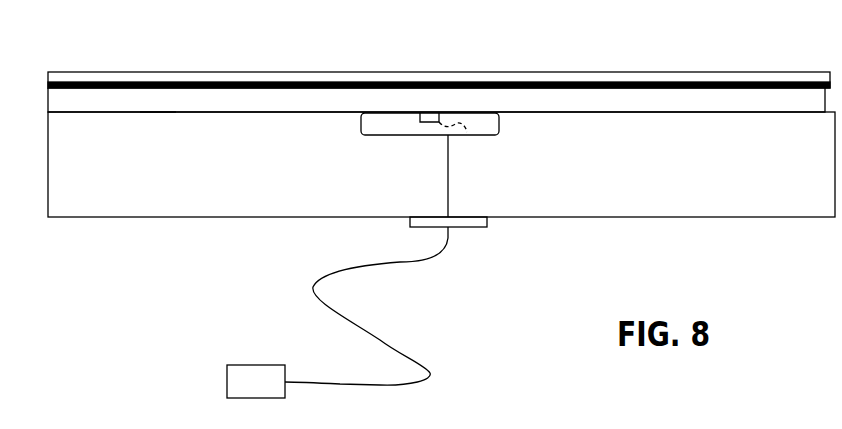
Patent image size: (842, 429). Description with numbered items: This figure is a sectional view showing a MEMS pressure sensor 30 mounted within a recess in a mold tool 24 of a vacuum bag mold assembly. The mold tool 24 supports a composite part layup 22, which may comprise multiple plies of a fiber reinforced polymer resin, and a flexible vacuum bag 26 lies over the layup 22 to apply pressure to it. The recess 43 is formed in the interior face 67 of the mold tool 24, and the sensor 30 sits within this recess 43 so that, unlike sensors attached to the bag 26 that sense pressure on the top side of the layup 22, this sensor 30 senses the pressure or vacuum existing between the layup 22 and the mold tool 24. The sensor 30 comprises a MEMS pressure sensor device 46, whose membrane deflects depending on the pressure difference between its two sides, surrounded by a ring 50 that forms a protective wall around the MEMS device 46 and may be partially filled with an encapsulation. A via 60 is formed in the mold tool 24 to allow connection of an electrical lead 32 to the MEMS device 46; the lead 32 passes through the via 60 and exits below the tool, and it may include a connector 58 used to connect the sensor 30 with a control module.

The composite part layup 22 is at (679, 105).
The mold tool 24 is at (98, 200).
The vacuum bag 26 is at (253, 80).
The pressure sensor 30 is at (354, 135).
The electrical lead 32 is at (413, 355).
The recess 43 is at (499, 137).
The MEMS pressure sensor device 46 is at (428, 113).
The ring 50 is at (360, 123).
The connector 58 is at (227, 378).
The via 60 is at (437, 175).
The interior face 67 is at (158, 111).